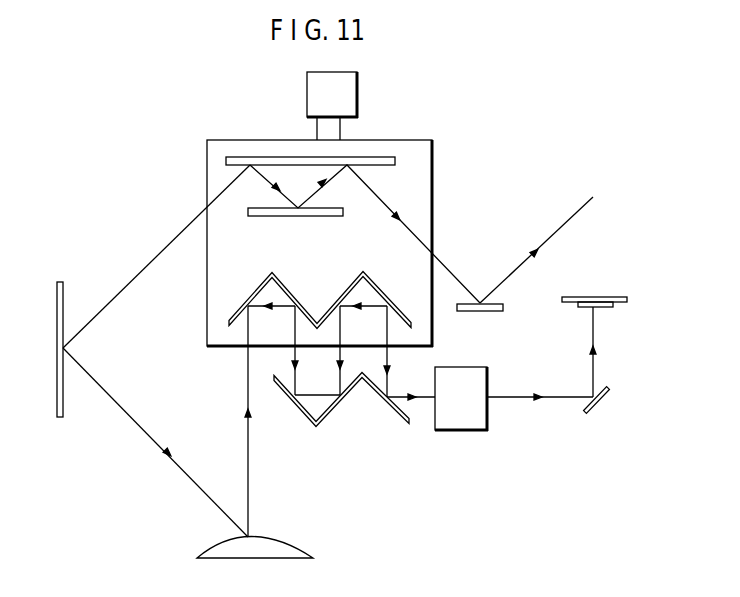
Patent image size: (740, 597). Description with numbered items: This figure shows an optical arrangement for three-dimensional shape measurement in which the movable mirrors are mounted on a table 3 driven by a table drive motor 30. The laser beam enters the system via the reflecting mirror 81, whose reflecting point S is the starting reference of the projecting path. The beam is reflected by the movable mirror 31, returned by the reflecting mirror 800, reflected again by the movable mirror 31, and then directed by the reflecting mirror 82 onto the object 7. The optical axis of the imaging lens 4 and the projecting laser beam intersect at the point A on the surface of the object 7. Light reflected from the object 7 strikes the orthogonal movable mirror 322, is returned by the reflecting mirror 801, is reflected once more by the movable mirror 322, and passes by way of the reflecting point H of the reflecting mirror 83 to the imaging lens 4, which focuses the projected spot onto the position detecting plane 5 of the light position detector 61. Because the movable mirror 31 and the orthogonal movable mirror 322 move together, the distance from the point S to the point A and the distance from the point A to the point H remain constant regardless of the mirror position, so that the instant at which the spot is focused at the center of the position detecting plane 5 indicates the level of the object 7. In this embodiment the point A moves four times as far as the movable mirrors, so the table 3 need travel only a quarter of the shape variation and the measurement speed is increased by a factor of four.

The table 3 is at (430, 140).
The table drive motor 30 is at (357, 102).
The movable mirror 31 is at (277, 157).
The reflecting mirror 800 is at (315, 216).
The orthogonal movable mirror 322 is at (228, 322).
The reflecting mirror 801 is at (390, 425).
The reflecting mirror 81 is at (502, 311).
The reflecting point S is at (480, 302).
The position detecting plane 5 is at (593, 297).
The light position detector 61 is at (618, 307).
The reflecting mirror 83 is at (606, 417).
The imaging lens 4 is at (462, 430).
The reflecting point H is at (387, 395).
The reflecting mirror 82 is at (58, 417).
The object 7 is at (245, 553).
The intersection point A is at (253, 533).